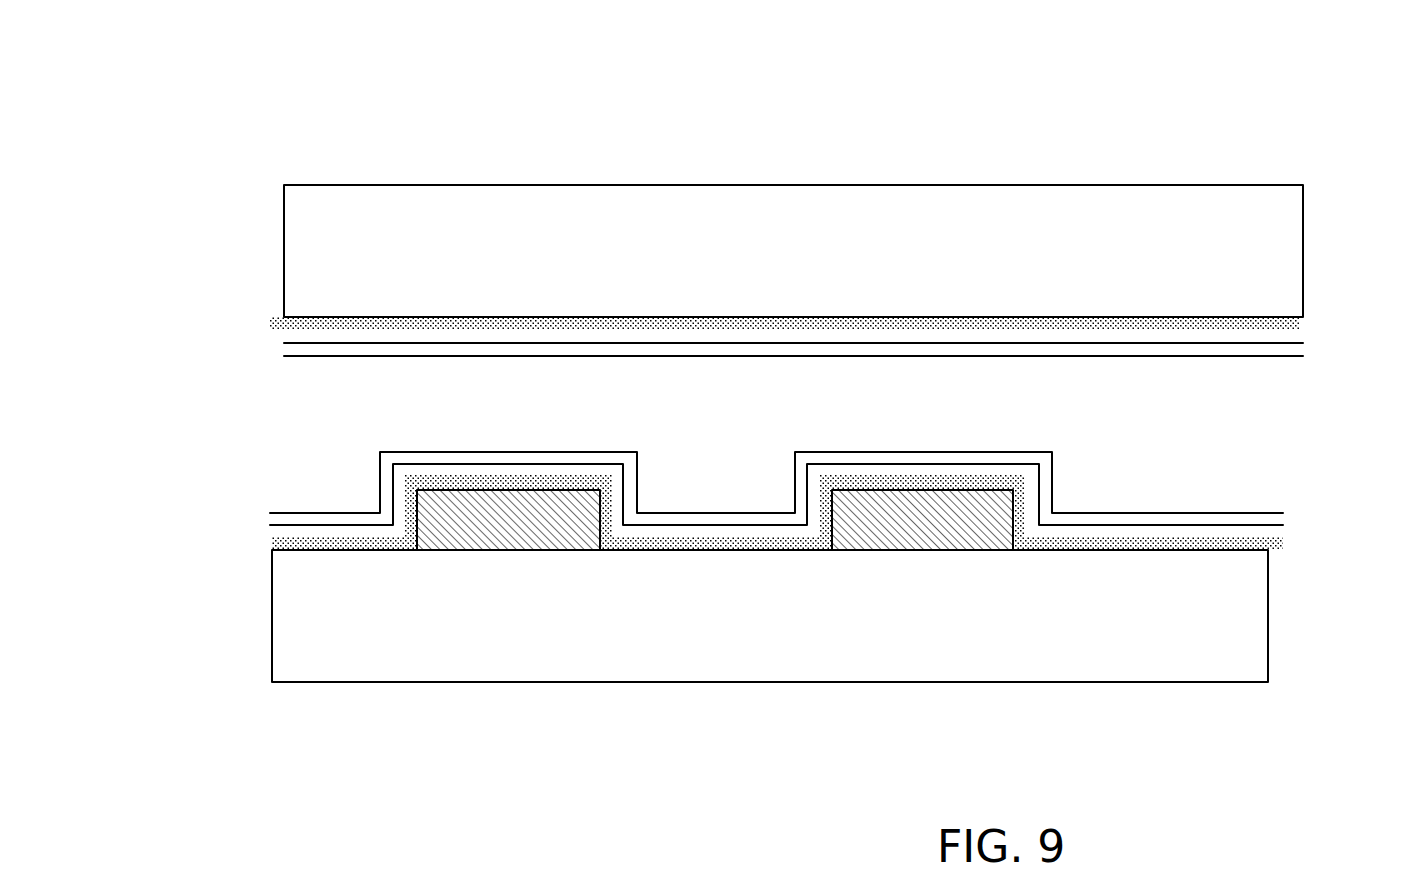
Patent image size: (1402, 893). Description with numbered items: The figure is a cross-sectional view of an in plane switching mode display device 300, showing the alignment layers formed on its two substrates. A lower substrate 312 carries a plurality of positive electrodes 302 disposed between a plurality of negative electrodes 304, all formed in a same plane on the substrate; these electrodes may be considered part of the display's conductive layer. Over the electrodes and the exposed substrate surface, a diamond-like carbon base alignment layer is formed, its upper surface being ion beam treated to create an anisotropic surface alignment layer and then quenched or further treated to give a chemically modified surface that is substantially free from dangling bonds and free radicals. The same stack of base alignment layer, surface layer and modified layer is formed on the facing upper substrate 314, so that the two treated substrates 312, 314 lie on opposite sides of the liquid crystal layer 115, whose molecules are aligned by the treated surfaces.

The in plane switching mode display device 300 is at (258, 46).
The substrate 314 is at (280, 258).
The substrate 312 is at (246, 645).
The liquid crystal layer 115 is at (946, 418).
The positive electrodes 302 is at (520, 533).
The negative electrodes 304 is at (905, 555).